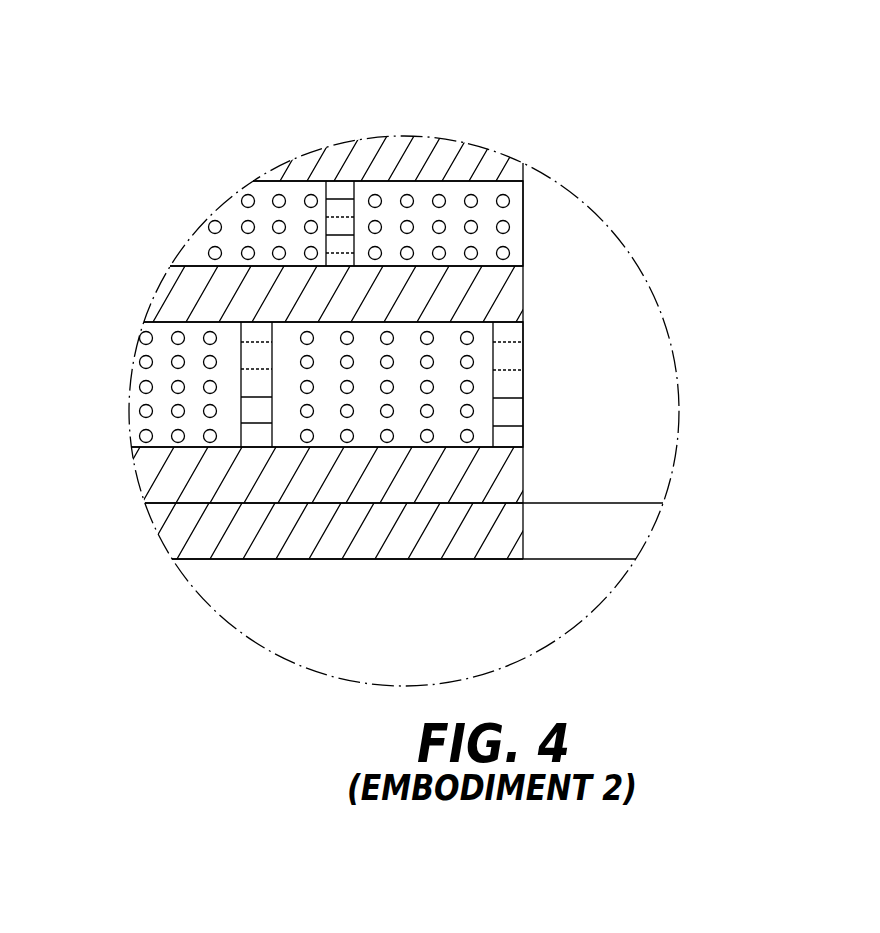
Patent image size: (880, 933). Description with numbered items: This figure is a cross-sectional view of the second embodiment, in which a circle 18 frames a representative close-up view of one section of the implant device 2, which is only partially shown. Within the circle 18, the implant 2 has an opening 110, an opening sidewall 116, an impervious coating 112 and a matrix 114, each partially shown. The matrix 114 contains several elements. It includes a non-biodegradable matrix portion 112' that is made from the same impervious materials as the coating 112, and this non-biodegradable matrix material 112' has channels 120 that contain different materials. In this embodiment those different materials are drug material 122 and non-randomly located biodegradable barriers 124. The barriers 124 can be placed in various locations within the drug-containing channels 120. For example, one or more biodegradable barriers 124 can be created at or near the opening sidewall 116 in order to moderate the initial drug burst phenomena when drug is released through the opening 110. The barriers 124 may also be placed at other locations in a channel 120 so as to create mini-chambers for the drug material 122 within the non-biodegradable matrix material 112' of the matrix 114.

The implant device 2 is at (443, 563).
The circle 18 is at (636, 172).
The opening 110 is at (627, 545).
The impervious coating 112 is at (323, 531).
The non-biodegradable matrix portion 112' is at (313, 260).
The matrix 114 is at (471, 364).
The opening sidewall 116 is at (527, 187).
The channels 120 is at (242, 218).
The drug material 122 is at (203, 353).
The biodegradable barriers 124 is at (340, 197).